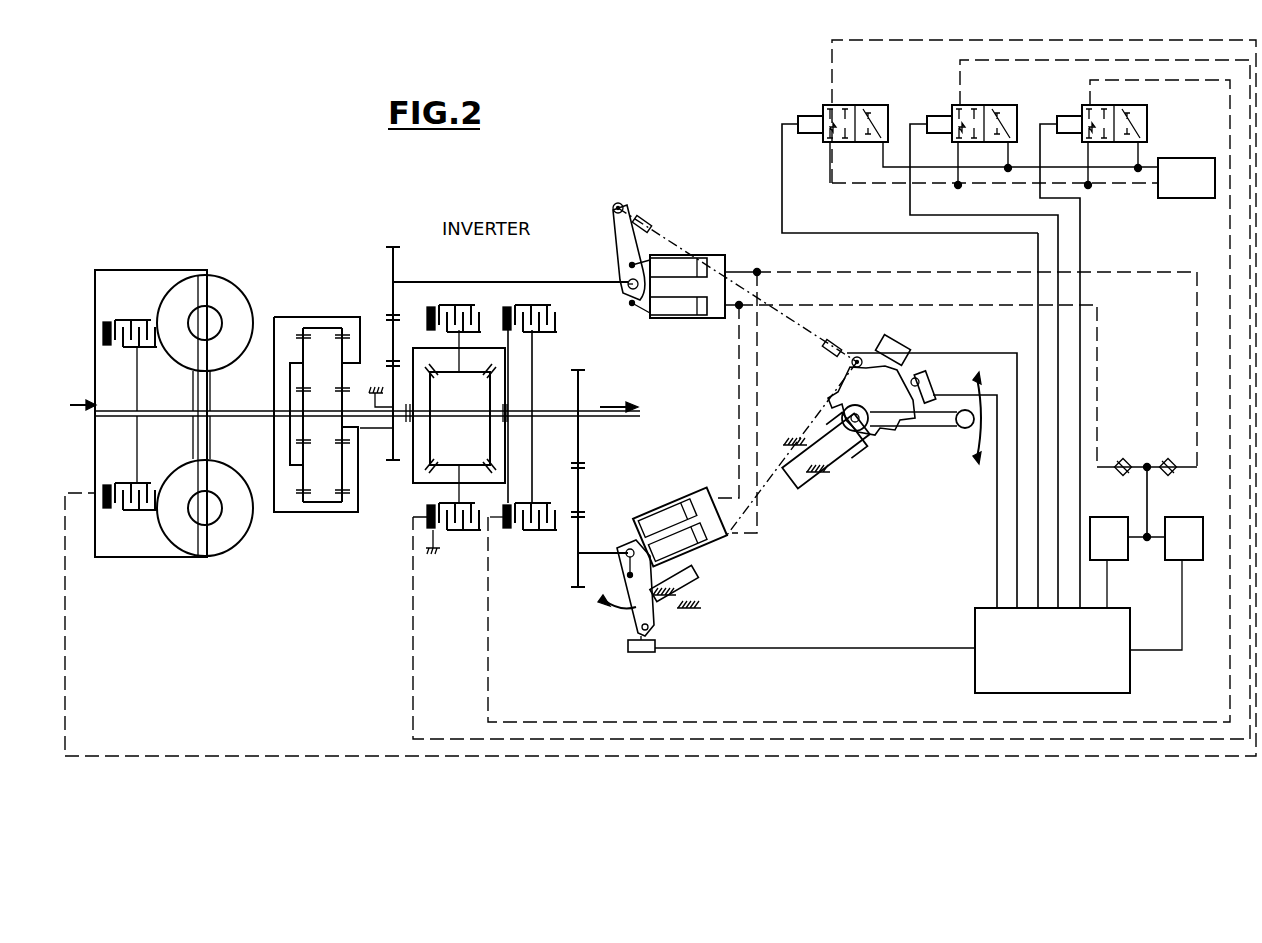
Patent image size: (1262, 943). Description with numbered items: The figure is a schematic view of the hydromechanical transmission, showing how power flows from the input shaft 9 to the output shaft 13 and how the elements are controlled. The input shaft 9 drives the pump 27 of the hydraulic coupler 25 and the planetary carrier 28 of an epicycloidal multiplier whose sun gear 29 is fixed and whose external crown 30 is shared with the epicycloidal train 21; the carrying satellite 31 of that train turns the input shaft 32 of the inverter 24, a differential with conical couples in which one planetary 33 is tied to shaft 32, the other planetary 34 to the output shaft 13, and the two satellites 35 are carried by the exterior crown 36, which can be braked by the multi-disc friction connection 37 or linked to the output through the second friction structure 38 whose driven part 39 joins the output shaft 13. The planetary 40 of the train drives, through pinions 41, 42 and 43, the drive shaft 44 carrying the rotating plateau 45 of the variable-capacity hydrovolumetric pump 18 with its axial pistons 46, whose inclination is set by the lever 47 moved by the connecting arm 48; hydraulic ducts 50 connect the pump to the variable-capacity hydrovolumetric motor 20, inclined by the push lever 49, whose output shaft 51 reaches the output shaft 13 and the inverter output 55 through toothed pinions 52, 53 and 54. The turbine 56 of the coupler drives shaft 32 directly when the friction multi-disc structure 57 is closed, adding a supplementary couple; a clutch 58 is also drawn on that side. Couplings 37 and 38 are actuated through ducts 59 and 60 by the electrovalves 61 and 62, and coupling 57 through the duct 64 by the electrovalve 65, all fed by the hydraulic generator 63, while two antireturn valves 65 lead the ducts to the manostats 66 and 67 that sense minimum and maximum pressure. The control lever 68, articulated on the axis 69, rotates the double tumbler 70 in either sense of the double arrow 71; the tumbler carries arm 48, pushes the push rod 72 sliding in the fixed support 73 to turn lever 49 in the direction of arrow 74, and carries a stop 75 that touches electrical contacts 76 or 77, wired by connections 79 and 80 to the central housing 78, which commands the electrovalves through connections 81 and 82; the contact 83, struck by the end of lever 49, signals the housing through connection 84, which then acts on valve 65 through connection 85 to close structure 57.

The input shaft 9 is at (82, 415).
The output shaft 13 is at (628, 412).
The hydrovolumetric pump with variable cylinder capacity 18 is at (692, 240).
The hydrovolumetric motor with variable cylindrical capacity 20 is at (684, 485).
The epicycloidal train 21 is at (310, 462).
The inverter 24 is at (465, 295).
The hydraulic coupler 25 is at (205, 266).
The pump 27 is at (228, 298).
The planetary carrier 28 is at (358, 340).
The sun gear 29 is at (378, 432).
The external crown 30 is at (316, 328).
The carrying satellite 31 is at (290, 430).
The input shaft of inverter 32 is at (413, 450).
The planetary 33 is at (431, 388).
The planetary 34 is at (488, 432).
The satellites 35 is at (432, 458).
The exterior crown 36 is at (413, 490).
The multi-disc friction connection 37 is at (463, 540).
The second friction structure with multi-discs 38 is at (520, 540).
The driven part 39 is at (533, 365).
The planetary 40 is at (307, 398).
The pinion 41 is at (384, 385).
The pinion 42 is at (395, 348).
The pinion 43 is at (396, 262).
The drive shaft 44 is at (518, 282).
The rotating plateau 45 is at (626, 300).
The axial pistons 46 is at (680, 270).
The lever 47 is at (613, 242).
The connecting arm 48 is at (640, 218).
The push lever 49 is at (632, 585).
The hydraulic ducts 50 is at (757, 390).
The output shaft of motor 51 is at (608, 553).
The toothed pinion 52 is at (578, 568).
The toothed pinion 53 is at (580, 482).
The toothed pinion 54 is at (580, 440).
The output of inverter 55 is at (578, 411).
The turbine 56 is at (175, 305).
The friction multi-disc structure 57 is at (126, 515).
The clutch 58 is at (140, 383).
The duct 59 is at (960, 80).
The duct 60 is at (1230, 103).
The electrovalve with three paths and two positions 61 is at (980, 106).
The electrovalve with three paths and two positions 62 is at (1082, 105).
The hydraulic generator 63 is at (1183, 175).
The duct 64 is at (832, 75).
The electrovalve 65 is at (855, 106).
The manostat 66 is at (1107, 537).
The manostat 67 is at (1182, 537).
The control lever 68 is at (925, 430).
The axis 69 is at (858, 437).
The double tumbler 70 is at (845, 380).
The double arrow 71 is at (972, 440).
The push rod 72 is at (697, 590).
The fixed support 73 is at (786, 440).
The arrow 74 is at (618, 612).
The stop 75 is at (905, 368).
The electrical contact 76 is at (885, 338).
The electrical contact 77 is at (934, 375).
The central housing 78 is at (975, 628).
The electrical connection 79 is at (1017, 500).
The electrical connection 80 is at (997, 530).
The electrical connection 81 is at (1078, 238).
The electrical connection 82 is at (1080, 212).
The electrical contact 83 is at (641, 652).
The electrical connection 84 is at (824, 647).
The electrical connection 85 is at (782, 172).